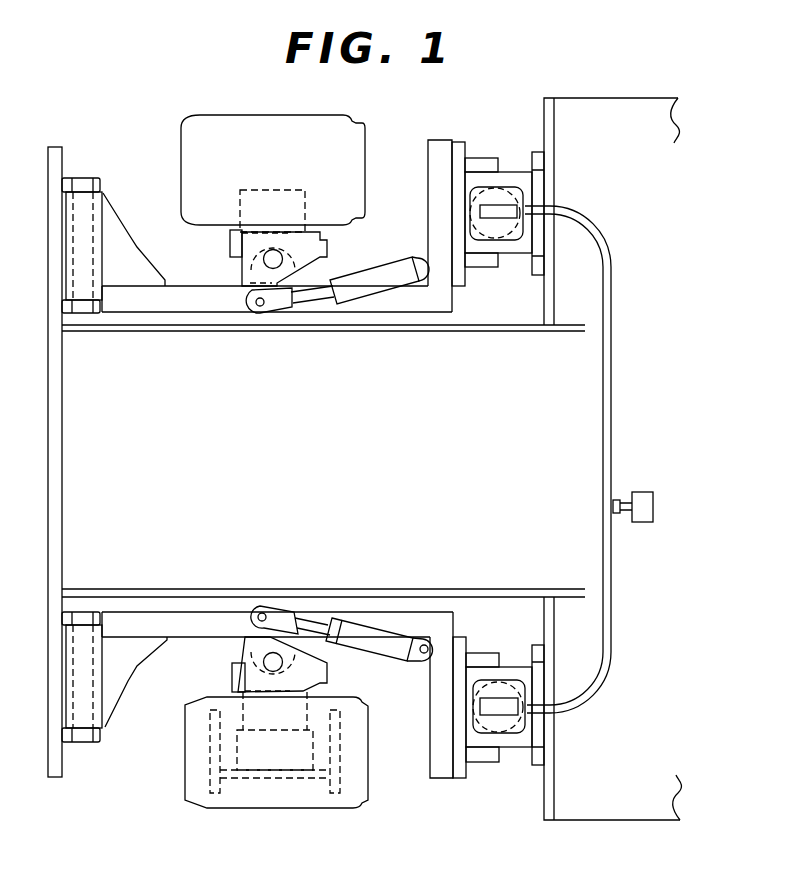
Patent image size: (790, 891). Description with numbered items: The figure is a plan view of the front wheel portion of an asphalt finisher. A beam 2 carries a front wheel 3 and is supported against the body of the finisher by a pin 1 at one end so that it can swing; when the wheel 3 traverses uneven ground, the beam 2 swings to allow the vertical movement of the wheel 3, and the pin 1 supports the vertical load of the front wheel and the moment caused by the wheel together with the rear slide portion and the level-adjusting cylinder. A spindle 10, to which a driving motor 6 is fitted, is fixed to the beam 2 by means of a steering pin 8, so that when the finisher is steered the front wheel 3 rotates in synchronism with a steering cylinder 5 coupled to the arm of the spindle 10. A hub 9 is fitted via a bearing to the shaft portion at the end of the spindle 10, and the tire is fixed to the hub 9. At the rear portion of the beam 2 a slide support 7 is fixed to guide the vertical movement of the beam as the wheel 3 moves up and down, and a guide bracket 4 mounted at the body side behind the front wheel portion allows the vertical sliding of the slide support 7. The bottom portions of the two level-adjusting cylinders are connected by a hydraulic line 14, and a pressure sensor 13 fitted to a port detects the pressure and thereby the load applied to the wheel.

The pin 1 is at (85, 744).
The beam 2 is at (216, 614).
The front wheel 3 is at (323, 809).
The guide bracket 4 is at (516, 748).
The steering cylinder 5 is at (393, 627).
The driving motor 6 is at (306, 712).
The slide support 7 is at (484, 765).
The steering pin 8 is at (272, 672).
The hub 9 is at (207, 786).
The spindle 10 is at (230, 677).
The pressure sensor 13 is at (643, 523).
The hydraulic line 14 is at (597, 694).